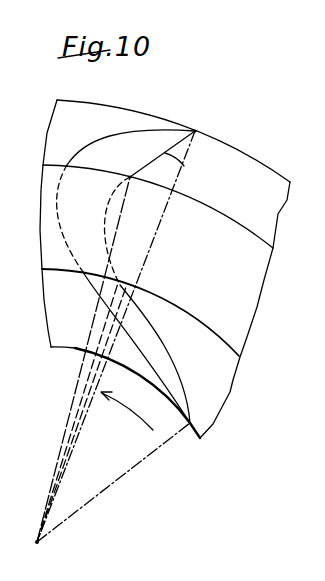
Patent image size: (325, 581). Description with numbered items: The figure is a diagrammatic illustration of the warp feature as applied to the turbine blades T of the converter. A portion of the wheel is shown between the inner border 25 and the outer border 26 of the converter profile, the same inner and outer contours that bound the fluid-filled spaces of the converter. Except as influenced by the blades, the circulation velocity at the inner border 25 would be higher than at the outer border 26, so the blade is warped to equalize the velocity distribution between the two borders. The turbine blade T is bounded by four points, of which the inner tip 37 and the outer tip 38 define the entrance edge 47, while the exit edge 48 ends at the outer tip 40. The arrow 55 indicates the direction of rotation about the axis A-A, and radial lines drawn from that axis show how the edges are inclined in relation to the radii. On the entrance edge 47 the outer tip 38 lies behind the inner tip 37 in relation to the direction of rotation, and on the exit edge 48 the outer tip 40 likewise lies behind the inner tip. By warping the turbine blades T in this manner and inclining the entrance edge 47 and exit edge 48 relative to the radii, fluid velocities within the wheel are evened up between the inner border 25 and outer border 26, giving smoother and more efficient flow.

The inner border 25 is at (218, 213).
The outer border 26 is at (263, 164).
The inner tip of entrance edge 37 is at (130, 178).
The outer tip of entrance edge 38 is at (195, 131).
The outer tip of exit edge 40 is at (202, 421).
The entrance edge 47 is at (184, 166).
The exit edge 48 is at (165, 343).
The arrow 55 is at (125, 408).
The turbine blades T is at (100, 298).
The axis A-A is at (104, 368).